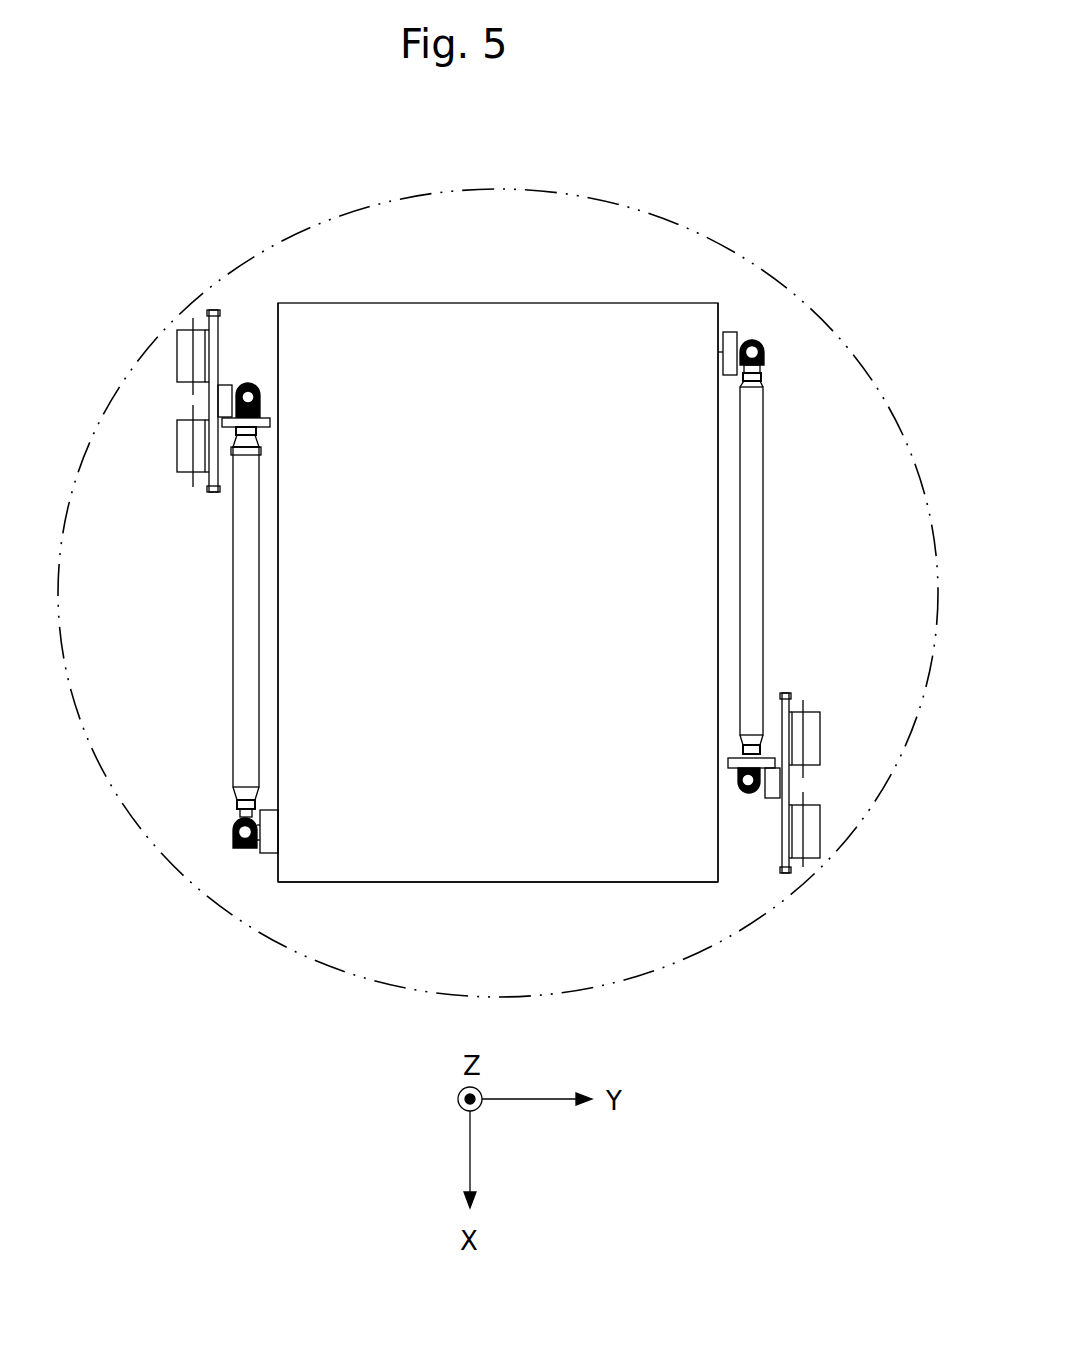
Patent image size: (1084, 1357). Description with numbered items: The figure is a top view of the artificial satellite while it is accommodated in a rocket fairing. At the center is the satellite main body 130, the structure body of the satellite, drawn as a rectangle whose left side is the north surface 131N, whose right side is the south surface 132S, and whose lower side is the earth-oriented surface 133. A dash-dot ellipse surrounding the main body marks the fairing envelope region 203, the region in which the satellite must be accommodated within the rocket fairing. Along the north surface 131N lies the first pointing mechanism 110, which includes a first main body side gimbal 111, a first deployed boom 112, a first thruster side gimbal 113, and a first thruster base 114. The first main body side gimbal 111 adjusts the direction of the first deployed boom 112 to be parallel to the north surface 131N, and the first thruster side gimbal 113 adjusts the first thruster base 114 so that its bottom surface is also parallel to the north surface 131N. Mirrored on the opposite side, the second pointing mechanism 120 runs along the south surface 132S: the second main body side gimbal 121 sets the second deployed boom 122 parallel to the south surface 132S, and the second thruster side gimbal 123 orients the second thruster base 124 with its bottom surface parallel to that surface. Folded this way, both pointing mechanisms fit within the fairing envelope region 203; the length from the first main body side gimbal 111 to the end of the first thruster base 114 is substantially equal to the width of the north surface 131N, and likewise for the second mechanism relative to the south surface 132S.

The fairing envelope region 203 is at (468, 189).
The satellite main body 130 is at (481, 284).
The north surface 131N is at (278, 608).
The south surface 132S is at (718, 577).
The earth-oriented surface 133 is at (530, 866).
The first pointing mechanism 110 is at (191, 630).
The first main body side gimbal 111 is at (238, 828).
The first deployed boom 112 is at (233, 752).
The first thruster side gimbal 113 is at (248, 392).
The first thruster base 114 is at (210, 493).
The second pointing mechanism 120 is at (798, 562).
The second main body side gimbal 121 is at (760, 355).
The second deployed boom 122 is at (765, 530).
The second thruster side gimbal 123 is at (750, 792).
The second thruster base 124 is at (788, 693).